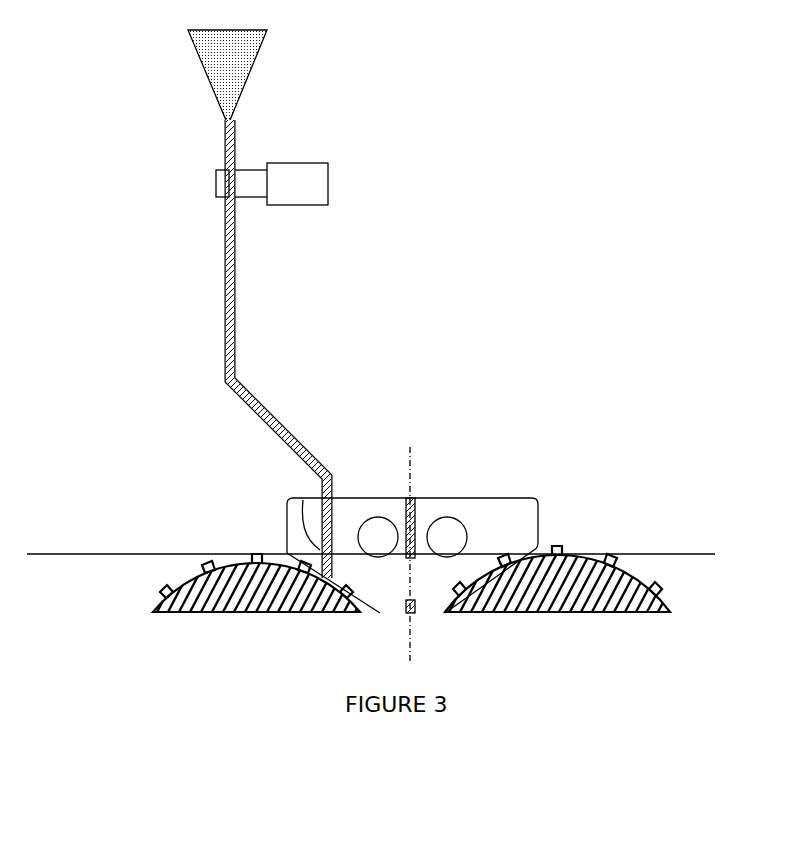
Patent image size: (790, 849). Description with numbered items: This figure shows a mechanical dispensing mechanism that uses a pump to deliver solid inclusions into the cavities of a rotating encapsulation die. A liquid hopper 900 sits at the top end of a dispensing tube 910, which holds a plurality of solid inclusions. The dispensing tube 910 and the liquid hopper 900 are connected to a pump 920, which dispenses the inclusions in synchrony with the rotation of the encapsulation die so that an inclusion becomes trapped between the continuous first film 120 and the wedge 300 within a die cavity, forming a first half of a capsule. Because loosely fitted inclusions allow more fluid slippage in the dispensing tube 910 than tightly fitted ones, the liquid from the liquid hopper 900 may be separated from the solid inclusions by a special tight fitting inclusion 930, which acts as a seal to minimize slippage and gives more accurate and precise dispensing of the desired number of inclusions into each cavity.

The liquid hopper 900 is at (258, 93).
The pump 920 is at (330, 188).
The tight fitting inclusion 930 is at (233, 278).
The dispensing tube 910 is at (408, 545).
The wedge 300 is at (442, 590).
The continuous first film 120 is at (82, 553).